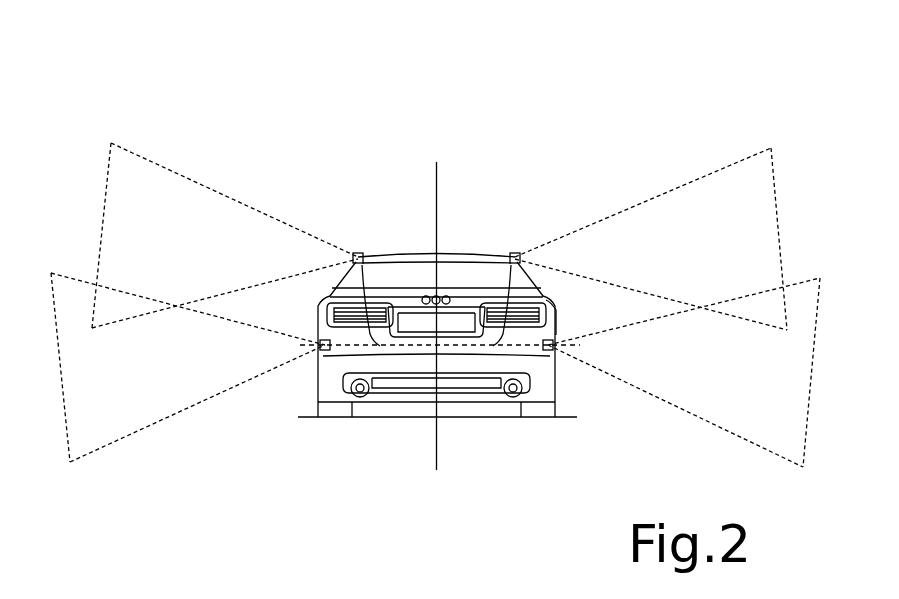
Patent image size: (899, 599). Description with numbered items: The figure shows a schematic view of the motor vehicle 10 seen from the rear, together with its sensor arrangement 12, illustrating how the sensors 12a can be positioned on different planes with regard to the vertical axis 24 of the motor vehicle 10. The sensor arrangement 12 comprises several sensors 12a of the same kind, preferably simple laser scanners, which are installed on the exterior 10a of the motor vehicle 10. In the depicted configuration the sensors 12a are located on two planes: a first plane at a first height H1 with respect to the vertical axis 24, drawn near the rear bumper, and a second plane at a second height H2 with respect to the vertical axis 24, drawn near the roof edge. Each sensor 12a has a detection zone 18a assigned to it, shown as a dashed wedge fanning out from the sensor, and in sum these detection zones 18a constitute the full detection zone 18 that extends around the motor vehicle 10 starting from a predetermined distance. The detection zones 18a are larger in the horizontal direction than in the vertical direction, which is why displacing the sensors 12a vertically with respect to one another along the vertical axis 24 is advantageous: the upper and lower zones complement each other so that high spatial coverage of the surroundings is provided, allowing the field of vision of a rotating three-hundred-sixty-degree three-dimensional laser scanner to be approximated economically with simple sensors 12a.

The motor vehicle 10 is at (330, 94).
The exterior 10a is at (560, 314).
The sensor arrangement 12 is at (377, 197).
The sensors 12a is at (358, 253).
The full detection zone 18 is at (104, 152).
The detection zones 18a is at (195, 196).
The vertical axis 24 is at (438, 200).
The first height H1 is at (441, 347).
The second height H2 is at (440, 256).